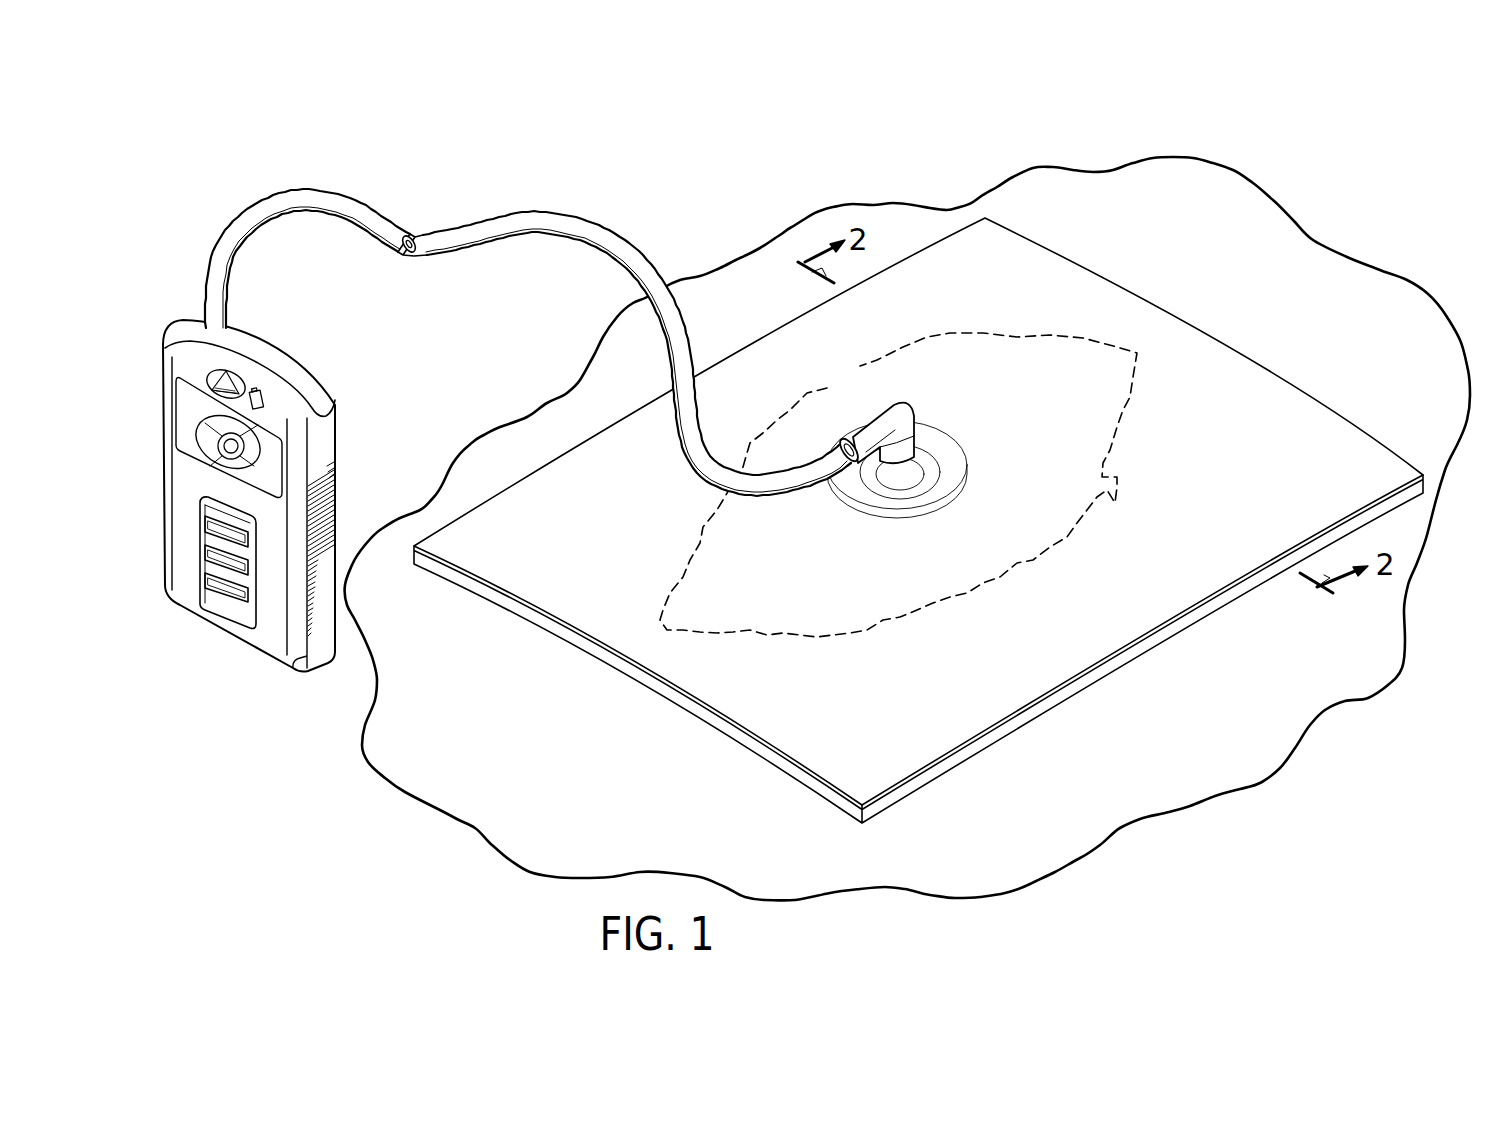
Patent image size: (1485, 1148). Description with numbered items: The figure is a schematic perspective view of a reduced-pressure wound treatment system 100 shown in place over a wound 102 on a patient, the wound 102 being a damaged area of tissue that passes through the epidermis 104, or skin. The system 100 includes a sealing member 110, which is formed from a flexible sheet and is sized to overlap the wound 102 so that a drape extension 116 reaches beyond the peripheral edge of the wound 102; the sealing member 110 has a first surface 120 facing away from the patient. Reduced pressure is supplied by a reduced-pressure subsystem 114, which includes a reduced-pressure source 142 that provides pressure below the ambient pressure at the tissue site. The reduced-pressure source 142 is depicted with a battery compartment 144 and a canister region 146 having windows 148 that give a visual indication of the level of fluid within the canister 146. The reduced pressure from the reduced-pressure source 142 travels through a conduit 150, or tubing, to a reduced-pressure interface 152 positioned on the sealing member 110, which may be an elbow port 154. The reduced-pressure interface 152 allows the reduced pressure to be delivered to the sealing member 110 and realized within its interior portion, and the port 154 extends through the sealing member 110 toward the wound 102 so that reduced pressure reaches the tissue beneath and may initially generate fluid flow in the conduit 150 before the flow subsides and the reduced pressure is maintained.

The reduced-pressure wound treatment system 100 is at (939, 126).
The wound 102 is at (1108, 498).
The epidermis 104 is at (511, 762).
The sealing member 110 is at (918, 520).
The reduced-pressure subsystem 114 is at (216, 464).
The drape extension 116 is at (1167, 322).
The first surface 120 is at (727, 708).
The reduced-pressure source 142 is at (268, 338).
The battery compartment 144 is at (182, 393).
The canister region 146 is at (225, 607).
The windows 148 is at (177, 589).
The conduit 150 is at (292, 192).
The reduced-pressure interface 152 is at (940, 406).
The elbow port 154 is at (866, 414).